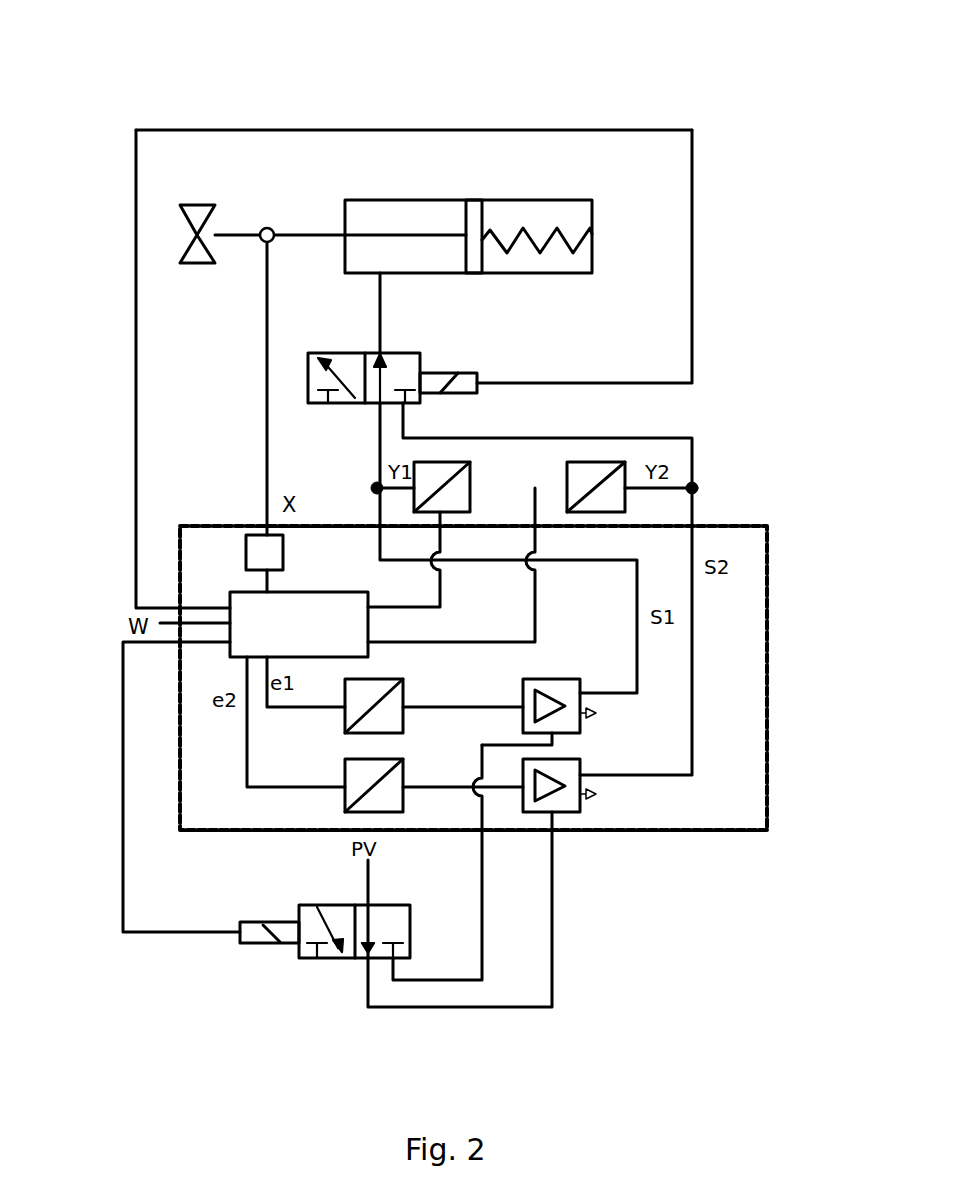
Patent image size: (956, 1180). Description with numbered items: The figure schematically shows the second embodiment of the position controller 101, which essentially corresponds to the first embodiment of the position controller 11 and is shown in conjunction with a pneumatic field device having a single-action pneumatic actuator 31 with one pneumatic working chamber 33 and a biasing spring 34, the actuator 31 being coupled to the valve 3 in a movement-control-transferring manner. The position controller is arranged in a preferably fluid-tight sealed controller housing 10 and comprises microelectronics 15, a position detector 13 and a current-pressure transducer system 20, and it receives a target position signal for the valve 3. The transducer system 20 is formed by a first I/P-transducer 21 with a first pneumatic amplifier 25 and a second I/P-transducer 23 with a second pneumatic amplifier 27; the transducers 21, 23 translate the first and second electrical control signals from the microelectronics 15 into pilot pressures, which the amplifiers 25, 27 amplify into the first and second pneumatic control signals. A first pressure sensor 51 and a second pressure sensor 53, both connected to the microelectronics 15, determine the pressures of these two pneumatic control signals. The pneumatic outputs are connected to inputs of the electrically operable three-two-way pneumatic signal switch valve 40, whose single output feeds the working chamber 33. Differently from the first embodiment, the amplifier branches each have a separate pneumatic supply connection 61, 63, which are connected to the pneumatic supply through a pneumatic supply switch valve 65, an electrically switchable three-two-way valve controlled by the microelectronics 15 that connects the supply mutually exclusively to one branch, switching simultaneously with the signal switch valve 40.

The control system 101 is at (538, 108).
The position controller 11 is at (731, 272).
The valve 3 is at (197, 205).
The pneumatic actuator 31 is at (363, 197).
The pneumatic working chamber 33 is at (421, 213).
The biasing spring 34 is at (577, 230).
The pneumatic signal switch valve 40 is at (308, 370).
The first pressure sensor 51 is at (468, 466).
The second pressure sensor 53 is at (602, 462).
The controller housing 10 is at (767, 770).
The position detector 13 is at (255, 552).
The microelectronics 15 is at (245, 637).
The current-pressure transducer system 20 is at (333, 821).
The first I/P-transducer 21 is at (431, 724).
The second I/P-transducer 23 is at (432, 805).
The first pneumatic amplifier 25 is at (575, 718).
The second pneumatic amplifier 27 is at (575, 805).
The pneumatic supply connection 61 is at (493, 833).
The pneumatic supply connection 63 is at (555, 833).
The pneumatic supply switch valve 65 is at (300, 958).